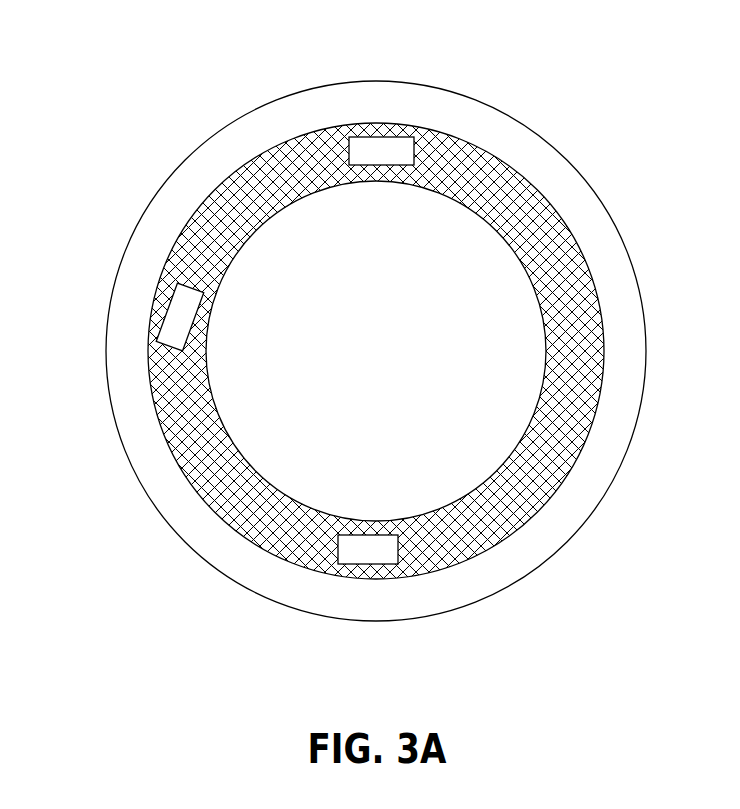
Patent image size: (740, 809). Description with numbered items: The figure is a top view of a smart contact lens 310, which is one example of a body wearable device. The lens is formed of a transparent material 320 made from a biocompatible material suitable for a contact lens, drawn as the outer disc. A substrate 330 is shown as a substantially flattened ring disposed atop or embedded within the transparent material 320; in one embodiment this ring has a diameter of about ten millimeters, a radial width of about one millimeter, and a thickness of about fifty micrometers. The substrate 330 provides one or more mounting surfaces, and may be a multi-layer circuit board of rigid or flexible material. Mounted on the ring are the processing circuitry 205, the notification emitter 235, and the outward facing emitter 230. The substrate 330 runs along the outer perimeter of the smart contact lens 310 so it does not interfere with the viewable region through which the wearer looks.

The smart contact lens 310 is at (172, 68).
The transparent material 320 is at (142, 443).
The substrate 330 is at (225, 492).
The notification emitter 235 is at (381, 151).
The outward facing emitter 230 is at (368, 549).
The processing circuitry 205 is at (180, 317).